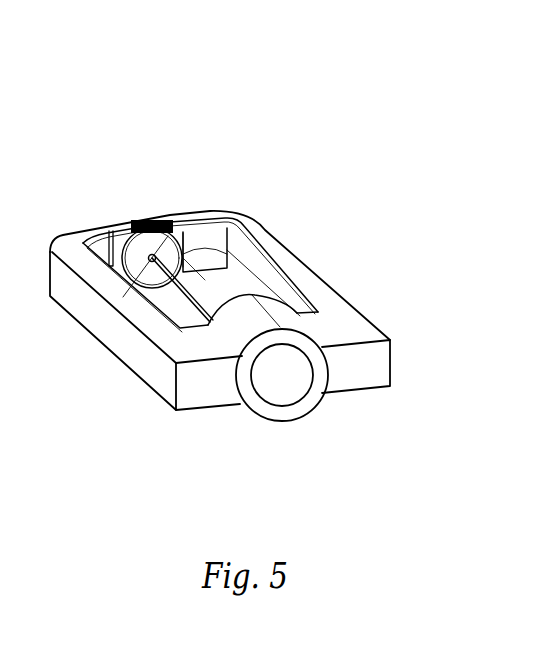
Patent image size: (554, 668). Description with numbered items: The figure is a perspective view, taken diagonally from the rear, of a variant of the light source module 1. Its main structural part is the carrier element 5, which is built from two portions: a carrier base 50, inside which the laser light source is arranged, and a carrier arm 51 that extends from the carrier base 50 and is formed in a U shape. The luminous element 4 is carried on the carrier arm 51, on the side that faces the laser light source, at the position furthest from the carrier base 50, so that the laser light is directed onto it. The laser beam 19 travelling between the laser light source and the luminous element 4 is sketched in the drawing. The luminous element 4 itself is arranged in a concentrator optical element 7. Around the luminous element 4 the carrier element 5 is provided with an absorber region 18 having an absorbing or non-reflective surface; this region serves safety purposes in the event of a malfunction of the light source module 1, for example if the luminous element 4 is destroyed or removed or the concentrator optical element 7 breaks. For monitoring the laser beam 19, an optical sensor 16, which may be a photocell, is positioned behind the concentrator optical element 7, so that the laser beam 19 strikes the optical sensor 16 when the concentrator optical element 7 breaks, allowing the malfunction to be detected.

The light source module 1 is at (272, 90).
The luminous element 4 is at (150, 261).
The carrier element 5 is at (290, 228).
The concentrator optical element 7 is at (178, 262).
The optical sensor 16 is at (178, 253).
The absorber region 18 is at (128, 236).
The laser beam 19 is at (197, 297).
The carrier base 50 is at (342, 327).
The carrier arm 51 is at (75, 251).